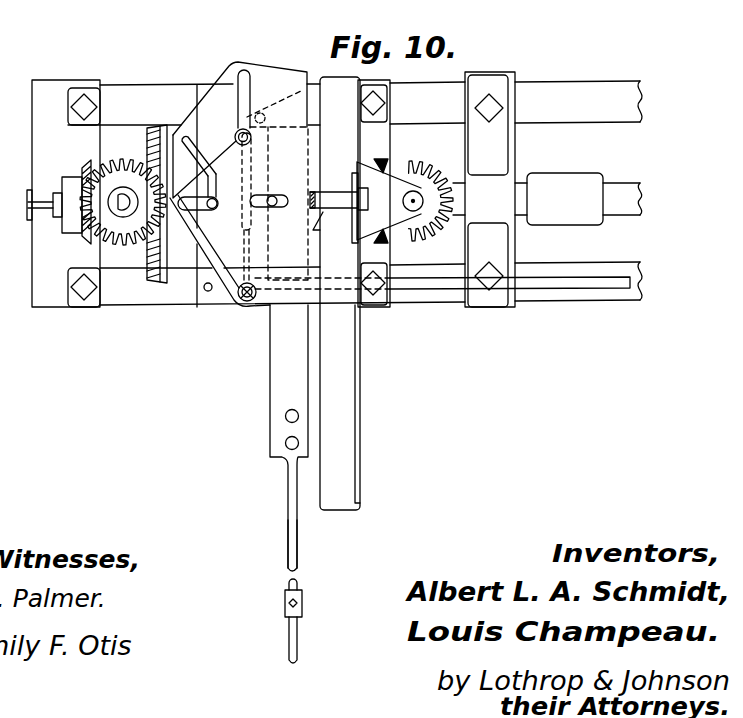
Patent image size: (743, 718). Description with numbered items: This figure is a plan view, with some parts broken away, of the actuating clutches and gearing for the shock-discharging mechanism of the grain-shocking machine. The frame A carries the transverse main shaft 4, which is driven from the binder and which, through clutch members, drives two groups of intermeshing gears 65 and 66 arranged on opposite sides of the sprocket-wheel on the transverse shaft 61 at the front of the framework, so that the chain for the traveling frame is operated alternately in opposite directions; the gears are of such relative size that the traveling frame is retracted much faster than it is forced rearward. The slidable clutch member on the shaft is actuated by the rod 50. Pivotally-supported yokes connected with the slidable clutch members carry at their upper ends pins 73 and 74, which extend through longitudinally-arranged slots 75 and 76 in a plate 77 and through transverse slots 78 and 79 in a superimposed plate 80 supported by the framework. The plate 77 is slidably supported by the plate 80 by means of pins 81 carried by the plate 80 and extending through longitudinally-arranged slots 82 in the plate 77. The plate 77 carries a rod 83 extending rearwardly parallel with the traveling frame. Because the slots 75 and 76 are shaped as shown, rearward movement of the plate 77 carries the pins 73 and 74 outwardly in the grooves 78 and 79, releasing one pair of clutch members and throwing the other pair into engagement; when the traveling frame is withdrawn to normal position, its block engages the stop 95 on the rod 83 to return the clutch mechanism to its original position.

The frame of the machine A is at (355, 103).
The transverse main shaft 4 is at (547, 199).
The rod 50 is at (572, 284).
The transverse shaft 61 is at (114, 192).
The group of intermeshing gears 65 is at (391, 164).
The group of intermeshing gears 66 is at (132, 204).
The pin 73 is at (274, 196).
The pin 74 is at (216, 188).
The longitudinally-arranged slot 75 is at (266, 160).
The longitudinally-arranged slot 76 is at (187, 133).
The plate 77 is at (262, 72).
The transverse slot 78 is at (279, 207).
The transverse slot 79 is at (199, 210).
The superimposed plate 80 is at (279, 203).
The pin 81 is at (236, 134).
The longitudinally-arranged slot 82 is at (243, 77).
The rod 83 is at (288, 514).
The stop 95 is at (285, 606).